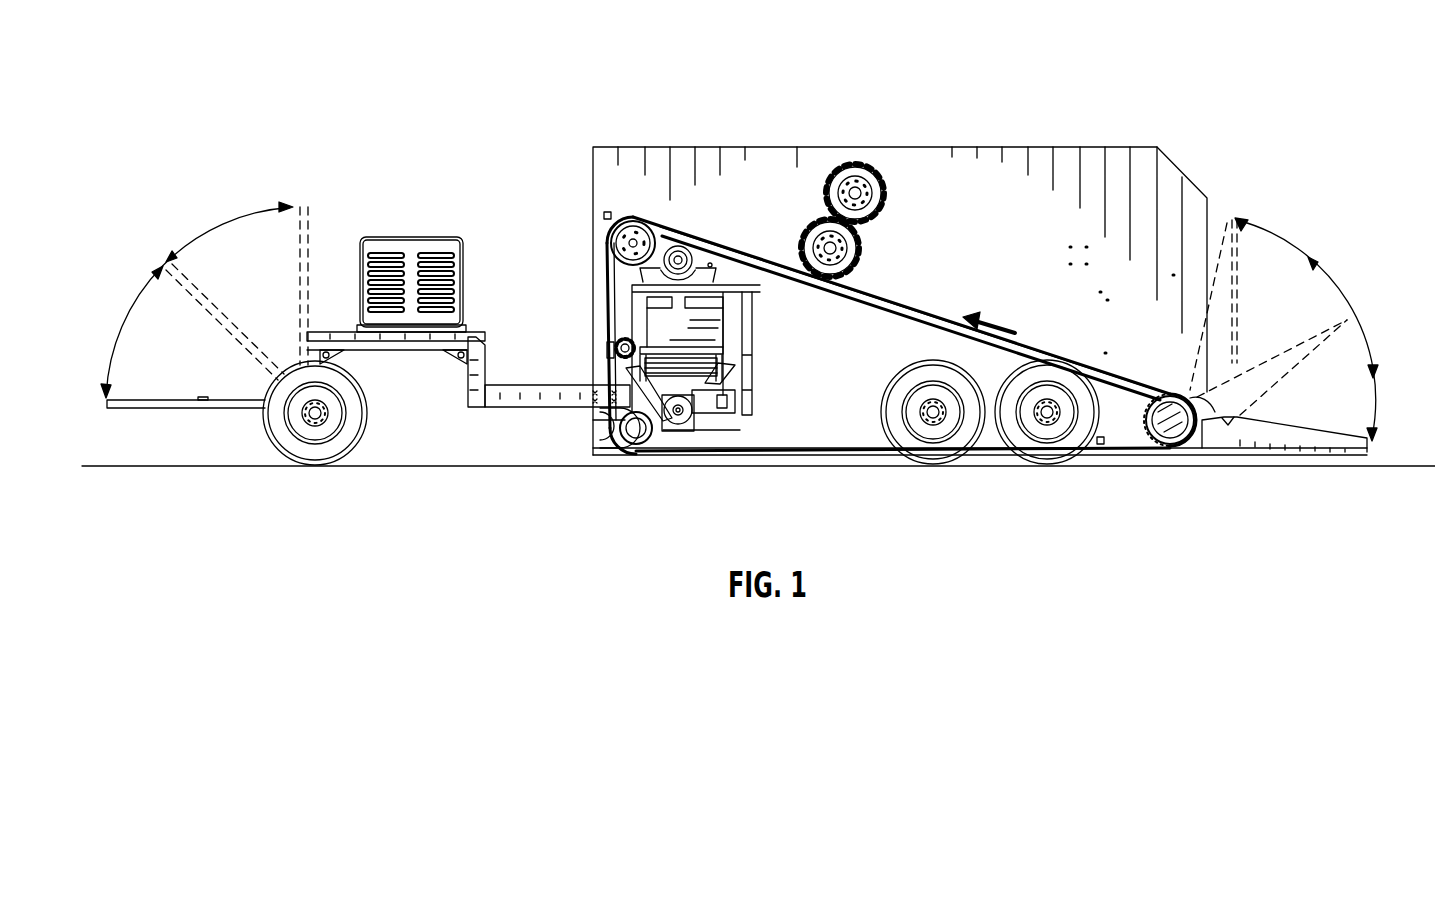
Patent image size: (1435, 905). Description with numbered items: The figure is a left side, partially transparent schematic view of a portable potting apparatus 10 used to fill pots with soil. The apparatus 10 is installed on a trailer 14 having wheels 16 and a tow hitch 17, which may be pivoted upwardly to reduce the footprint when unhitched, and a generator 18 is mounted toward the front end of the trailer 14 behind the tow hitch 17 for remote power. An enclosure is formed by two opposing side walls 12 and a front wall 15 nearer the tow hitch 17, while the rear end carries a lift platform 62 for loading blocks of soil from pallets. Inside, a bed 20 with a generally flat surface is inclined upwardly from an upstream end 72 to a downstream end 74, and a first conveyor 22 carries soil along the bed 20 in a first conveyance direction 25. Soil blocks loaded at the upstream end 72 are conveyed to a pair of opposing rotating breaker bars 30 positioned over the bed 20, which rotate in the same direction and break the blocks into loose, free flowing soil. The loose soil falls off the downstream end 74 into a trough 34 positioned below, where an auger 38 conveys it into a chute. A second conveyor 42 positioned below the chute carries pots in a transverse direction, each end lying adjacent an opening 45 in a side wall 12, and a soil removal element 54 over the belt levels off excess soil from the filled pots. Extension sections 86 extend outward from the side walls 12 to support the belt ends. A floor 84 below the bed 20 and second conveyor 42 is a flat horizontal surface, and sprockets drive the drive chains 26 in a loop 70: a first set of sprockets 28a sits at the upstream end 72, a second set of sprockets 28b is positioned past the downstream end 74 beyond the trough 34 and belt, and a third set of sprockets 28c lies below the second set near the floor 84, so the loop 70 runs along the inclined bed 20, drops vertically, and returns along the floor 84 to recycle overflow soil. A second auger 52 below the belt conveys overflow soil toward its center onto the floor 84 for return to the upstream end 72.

The potting apparatus 10 is at (368, 76).
The side walls 12 is at (985, 253).
The trailer 14 is at (526, 400).
The front wall 15 is at (587, 156).
The wheels 16 is at (300, 466).
The tow hitch 17 is at (165, 407).
The generator 18 is at (420, 237).
The bed 20 is at (870, 300).
The first conveyor 22 is at (881, 301).
The first conveyance direction 25 is at (992, 320).
The drive chains 26 is at (628, 312).
The first set of sprockets 28a is at (1168, 447).
The second set of sprockets 28b is at (610, 240).
The third set of sprockets 28c is at (636, 447).
The breaker bars 30 is at (822, 218).
The trough 34 is at (708, 262).
The auger 38 is at (672, 240).
The second conveyor 42 is at (723, 410).
The opening 45 is at (645, 315).
The second auger 52 is at (677, 426).
The soil removal element 54 is at (725, 308).
The lift platform 62 is at (1280, 453).
The loop 70 is at (600, 275).
The upstream end 72 is at (1170, 394).
The downstream end 74 is at (696, 226).
The floor 84 is at (605, 436).
The extension sections 86 is at (698, 449).